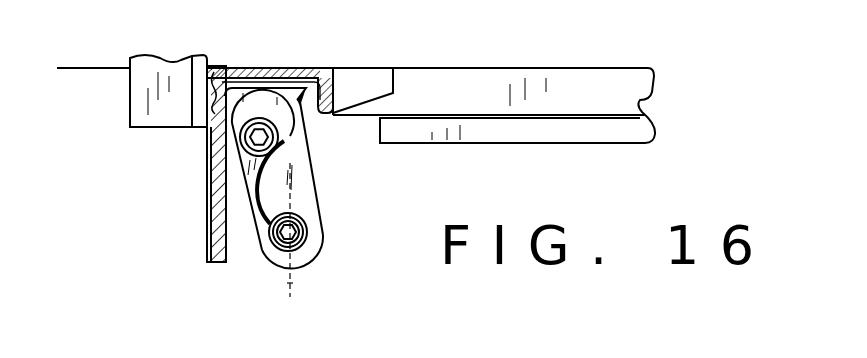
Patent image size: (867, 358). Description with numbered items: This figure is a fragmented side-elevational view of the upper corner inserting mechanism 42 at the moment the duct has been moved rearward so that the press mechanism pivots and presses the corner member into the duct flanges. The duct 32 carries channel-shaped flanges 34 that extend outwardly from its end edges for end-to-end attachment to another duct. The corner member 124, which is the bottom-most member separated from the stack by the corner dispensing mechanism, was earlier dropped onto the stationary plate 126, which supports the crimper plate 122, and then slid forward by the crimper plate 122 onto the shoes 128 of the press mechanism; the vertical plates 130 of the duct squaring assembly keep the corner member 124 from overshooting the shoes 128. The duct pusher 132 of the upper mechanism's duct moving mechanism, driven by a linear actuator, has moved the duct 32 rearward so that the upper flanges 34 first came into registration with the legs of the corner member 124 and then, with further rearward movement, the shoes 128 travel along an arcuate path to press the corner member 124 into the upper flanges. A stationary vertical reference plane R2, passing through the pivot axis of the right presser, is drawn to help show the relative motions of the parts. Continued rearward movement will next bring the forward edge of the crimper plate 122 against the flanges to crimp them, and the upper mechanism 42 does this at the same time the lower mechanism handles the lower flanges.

The channel-shaped flanges 34 is at (254, 70).
The crimper plate 122 is at (627, 80).
The stationary plate 126 is at (630, 127).
The upper corner inserting mechanism 42 is at (512, 152).
The shoes 128 is at (296, 100).
The duct pusher 132 is at (157, 128).
The corner member 124 is at (205, 157).
The duct 32 is at (207, 222).
The vertical plates 130 is at (219, 266).
The vertical reference plane R2 is at (290, 285).